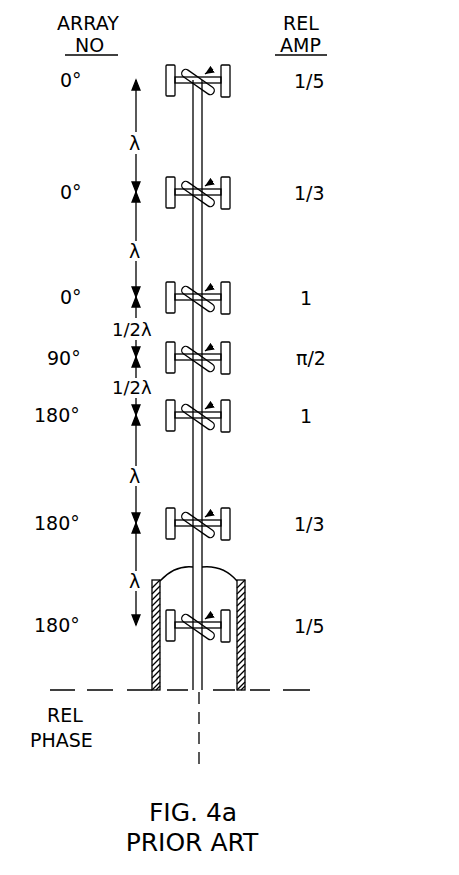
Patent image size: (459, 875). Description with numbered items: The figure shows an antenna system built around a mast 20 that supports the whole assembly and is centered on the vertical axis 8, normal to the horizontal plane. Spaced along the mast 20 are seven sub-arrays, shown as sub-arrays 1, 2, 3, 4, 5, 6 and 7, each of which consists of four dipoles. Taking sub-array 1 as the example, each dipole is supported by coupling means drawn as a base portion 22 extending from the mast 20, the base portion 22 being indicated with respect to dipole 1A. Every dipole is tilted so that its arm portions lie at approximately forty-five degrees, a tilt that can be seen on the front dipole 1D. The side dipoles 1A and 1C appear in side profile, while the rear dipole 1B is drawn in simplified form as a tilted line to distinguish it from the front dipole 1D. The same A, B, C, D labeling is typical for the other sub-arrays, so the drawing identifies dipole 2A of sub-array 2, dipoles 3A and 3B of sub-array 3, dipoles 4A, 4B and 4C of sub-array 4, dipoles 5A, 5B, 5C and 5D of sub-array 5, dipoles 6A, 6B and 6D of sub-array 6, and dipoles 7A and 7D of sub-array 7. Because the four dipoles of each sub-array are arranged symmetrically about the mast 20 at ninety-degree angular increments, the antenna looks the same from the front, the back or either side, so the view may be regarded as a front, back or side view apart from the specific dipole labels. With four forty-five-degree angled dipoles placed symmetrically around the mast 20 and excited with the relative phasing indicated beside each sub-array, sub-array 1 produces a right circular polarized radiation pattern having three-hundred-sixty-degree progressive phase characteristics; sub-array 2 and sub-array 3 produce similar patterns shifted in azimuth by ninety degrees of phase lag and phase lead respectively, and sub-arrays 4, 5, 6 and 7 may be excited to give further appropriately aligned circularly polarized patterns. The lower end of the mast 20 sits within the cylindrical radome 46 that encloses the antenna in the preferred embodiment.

The sub-array 1 is at (160, 357).
The sub-array 2 is at (160, 297).
The sub-array 3 is at (160, 415).
The sub-array 4 is at (160, 192).
The sub-array 5 is at (160, 523).
The sub-array 6 is at (160, 80).
The sub-array 7 is at (160, 625).
The side dipole 1A is at (231, 362).
The rear dipole 1B is at (207, 350).
The side dipole 1C is at (175, 345).
The front dipole 1D is at (208, 367).
The dipole 2A is at (229, 282).
The dipole 3A is at (228, 432).
The dipole 3B is at (190, 425).
The dipole 4A is at (229, 176).
The dipole 4B is at (190, 200).
The dipole 4C is at (172, 176).
The dipole 5A is at (231, 527).
The dipole 5B is at (210, 512).
The dipole 5C is at (173, 510).
The dipole 5D is at (208, 533).
The dipole 6A is at (229, 97).
The dipole 6B is at (187, 95).
The dipole 6D is at (187, 70).
The dipole 7A is at (221, 613).
The dipole 7D is at (192, 615).
The vertical axis 8 is at (199, 743).
The mast 20 is at (203, 675).
The base portion 22 is at (223, 207).
The cylindrical radome 46 is at (157, 670).